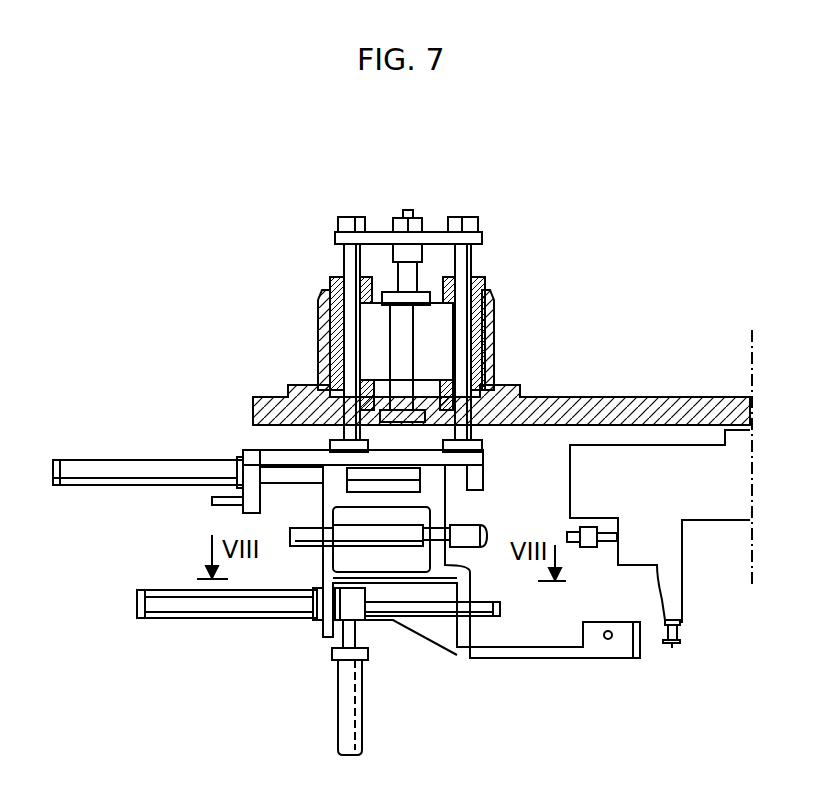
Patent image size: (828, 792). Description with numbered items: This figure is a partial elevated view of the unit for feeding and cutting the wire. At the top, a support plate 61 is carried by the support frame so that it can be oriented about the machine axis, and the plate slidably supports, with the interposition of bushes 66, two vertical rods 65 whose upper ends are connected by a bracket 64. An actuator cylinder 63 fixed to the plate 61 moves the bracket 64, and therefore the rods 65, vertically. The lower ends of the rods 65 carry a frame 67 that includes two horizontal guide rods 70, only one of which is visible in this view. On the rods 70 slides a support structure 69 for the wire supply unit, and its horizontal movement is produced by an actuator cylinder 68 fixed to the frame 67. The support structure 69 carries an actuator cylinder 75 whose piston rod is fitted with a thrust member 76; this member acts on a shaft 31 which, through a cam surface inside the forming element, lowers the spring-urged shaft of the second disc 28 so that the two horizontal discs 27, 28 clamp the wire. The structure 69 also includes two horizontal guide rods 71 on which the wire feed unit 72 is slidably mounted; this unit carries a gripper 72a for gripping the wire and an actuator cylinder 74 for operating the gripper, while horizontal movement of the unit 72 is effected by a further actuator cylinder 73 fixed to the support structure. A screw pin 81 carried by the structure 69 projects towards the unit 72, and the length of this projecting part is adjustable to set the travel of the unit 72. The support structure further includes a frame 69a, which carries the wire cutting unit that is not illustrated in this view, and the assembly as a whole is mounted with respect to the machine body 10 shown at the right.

The frame 10 is at (562, 457).
The horizontal disc 27 is at (672, 622).
The horizontal disc 28 is at (680, 645).
The shaft 31 is at (607, 545).
The support plate 61 is at (635, 410).
The actuator cylinder 63 is at (420, 332).
The bracket 64 is at (415, 238).
The rods 65 is at (348, 323).
The bushes 66 is at (330, 285).
The frame 67 is at (252, 455).
The actuator cylinder 68 is at (125, 470).
The support structure 69 is at (437, 492).
The frame 69a is at (497, 655).
The horizontal guide rods 70 is at (283, 474).
The horizontal guide rods 71 is at (432, 585).
The wire feed unit 72 is at (370, 622).
The gripper 72a is at (335, 628).
The actuator cylinder 73 is at (158, 595).
The actuator cylinder 74 is at (340, 737).
The actuator cylinder 75 is at (305, 545).
The thrust member 76 is at (488, 532).
The screw pin 81 is at (497, 614).